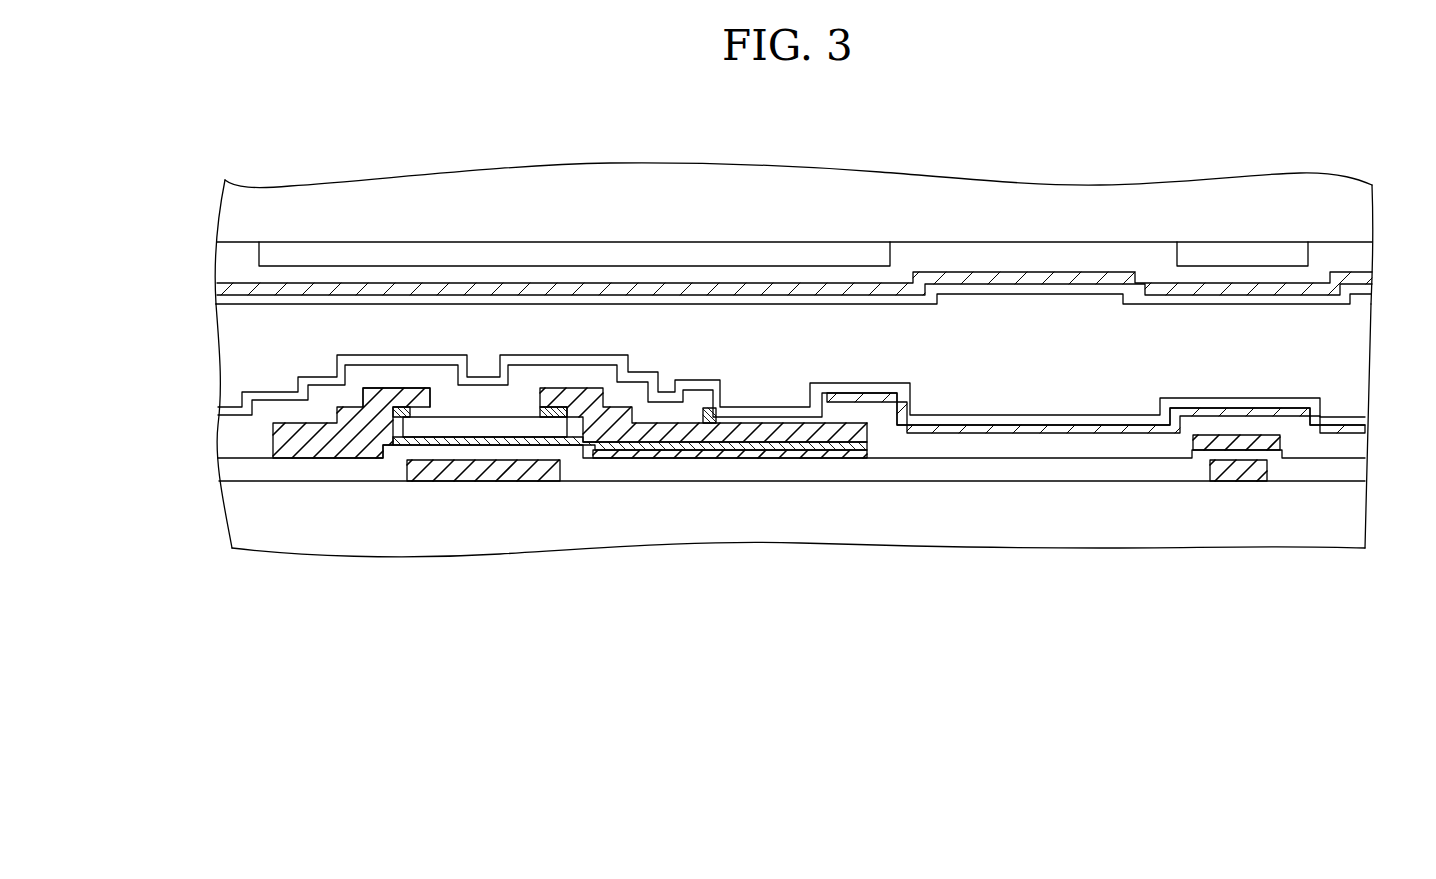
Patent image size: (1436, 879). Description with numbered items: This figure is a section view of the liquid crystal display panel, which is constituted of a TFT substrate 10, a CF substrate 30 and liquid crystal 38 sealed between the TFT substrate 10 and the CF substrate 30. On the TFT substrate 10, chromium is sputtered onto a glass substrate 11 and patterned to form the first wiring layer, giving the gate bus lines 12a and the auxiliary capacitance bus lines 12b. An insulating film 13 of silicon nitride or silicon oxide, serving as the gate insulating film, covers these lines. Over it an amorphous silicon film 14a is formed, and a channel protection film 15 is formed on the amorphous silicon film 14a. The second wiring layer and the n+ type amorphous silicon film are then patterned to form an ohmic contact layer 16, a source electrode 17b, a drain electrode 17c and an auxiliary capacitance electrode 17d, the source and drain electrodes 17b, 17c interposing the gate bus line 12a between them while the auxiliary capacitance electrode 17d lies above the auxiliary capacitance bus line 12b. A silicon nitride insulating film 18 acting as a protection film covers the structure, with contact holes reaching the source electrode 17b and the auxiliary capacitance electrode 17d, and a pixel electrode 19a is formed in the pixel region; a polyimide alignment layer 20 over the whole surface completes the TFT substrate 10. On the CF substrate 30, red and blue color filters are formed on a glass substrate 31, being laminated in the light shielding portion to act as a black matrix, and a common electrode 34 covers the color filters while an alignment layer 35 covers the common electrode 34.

The TFT substrate 10 is at (210, 392).
The glass substrate 11 is at (1360, 515).
The gate bus line 12a is at (497, 472).
The auxiliary capacitance bus line 12b is at (1243, 476).
The insulating film 13 is at (1365, 468).
The amorphous silicon film 14a is at (571, 455).
The channel protection film 15 is at (517, 421).
The ohmic contact layer 16 is at (318, 446).
The source electrode 17b is at (684, 428).
The drain electrode 17c is at (376, 392).
The auxiliary capacitance electrode 17d is at (1243, 440).
The insulating film 18 is at (427, 376).
The pixel electrode 19a is at (1075, 432).
The alignment layer 20 is at (965, 420).
The CF substrate 30 is at (210, 177).
The glass substrate 31 is at (1372, 207).
The common electrode 34 is at (876, 292).
The alignment layer 35 is at (975, 290).
The liquid crystal 38 is at (238, 353).